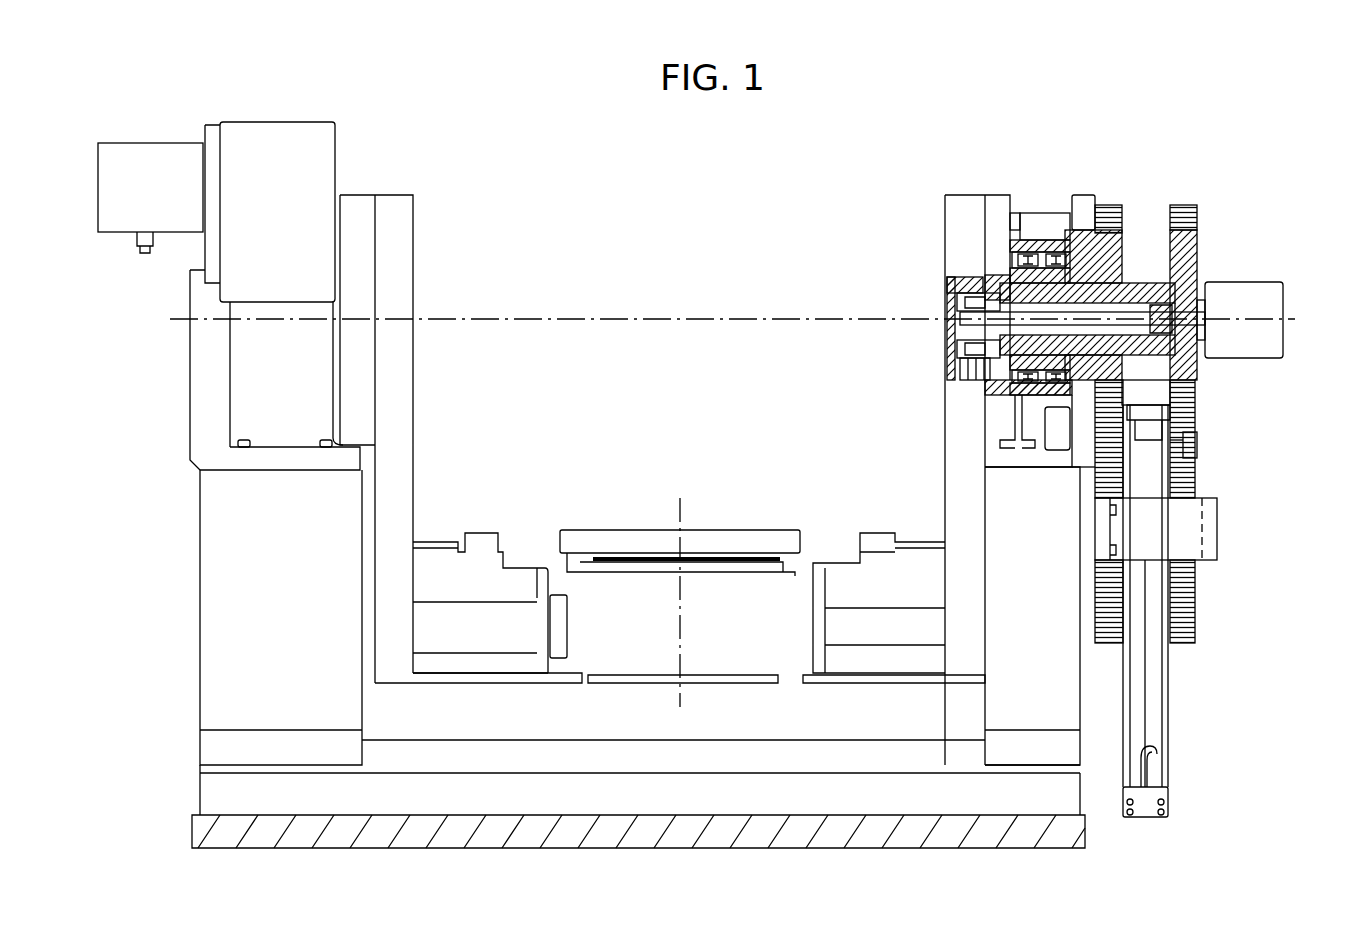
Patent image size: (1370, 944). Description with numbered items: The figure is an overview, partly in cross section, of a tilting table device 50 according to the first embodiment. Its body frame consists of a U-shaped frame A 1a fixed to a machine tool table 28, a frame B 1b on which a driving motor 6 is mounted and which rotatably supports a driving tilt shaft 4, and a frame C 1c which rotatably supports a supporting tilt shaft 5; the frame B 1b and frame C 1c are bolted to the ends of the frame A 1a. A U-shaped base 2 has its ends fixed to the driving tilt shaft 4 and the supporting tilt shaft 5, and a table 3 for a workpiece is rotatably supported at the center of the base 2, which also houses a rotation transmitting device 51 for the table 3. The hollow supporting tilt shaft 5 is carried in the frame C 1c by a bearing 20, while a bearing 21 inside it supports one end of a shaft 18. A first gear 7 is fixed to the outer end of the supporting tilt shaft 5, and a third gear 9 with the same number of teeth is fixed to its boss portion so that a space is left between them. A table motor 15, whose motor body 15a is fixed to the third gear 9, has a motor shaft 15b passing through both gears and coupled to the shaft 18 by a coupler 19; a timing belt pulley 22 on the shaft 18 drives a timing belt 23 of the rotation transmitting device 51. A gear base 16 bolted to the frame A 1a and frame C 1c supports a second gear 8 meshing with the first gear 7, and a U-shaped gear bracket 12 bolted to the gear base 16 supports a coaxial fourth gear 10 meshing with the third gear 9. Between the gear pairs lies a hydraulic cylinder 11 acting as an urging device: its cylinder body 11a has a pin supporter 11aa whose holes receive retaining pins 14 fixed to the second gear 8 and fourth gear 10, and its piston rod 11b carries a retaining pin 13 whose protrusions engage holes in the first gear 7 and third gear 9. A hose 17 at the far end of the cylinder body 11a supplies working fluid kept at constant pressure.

The frame A 1a is at (215, 795).
The frame B 1b is at (243, 415).
The frame C 1c is at (1022, 417).
The base 2 is at (518, 638).
The table 3 is at (637, 530).
The driving tilt shaft 4 is at (355, 196).
The supporting tilt shaft 5 is at (1000, 198).
The driving motor 6 is at (158, 146).
The first gear 7 is at (1108, 205).
The second gear 8 is at (1097, 655).
The third gear 9 is at (1183, 205).
The fourth gear 10 is at (1192, 584).
The hydraulic cylinder 11 is at (1168, 664).
The cylinder body 11a is at (1143, 705).
The pin supporter 11aa is at (1097, 470).
The piston rod 11b is at (1170, 430).
The gear bracket 12 is at (1195, 520).
The retaining pin 13 is at (1165, 392).
The retaining pin 14 is at (1197, 445).
The table motor 15 is at (1283, 300).
The motor body 15a is at (1283, 340).
The motor shaft 15b is at (1197, 300).
The gear base 16 is at (1090, 620).
The hose 17 is at (1152, 765).
The shaft 18 is at (966, 346).
The coupler 19 is at (1158, 283).
The bearing 20 is at (1022, 226).
The bearing 21 is at (995, 252).
The timing belt pulley 22 is at (945, 312).
The timing belt 23 is at (945, 347).
The machine tool table 28 is at (192, 834).
The tilting table device 50 is at (590, 214).
The rotation transmitting device 51 is at (845, 248).